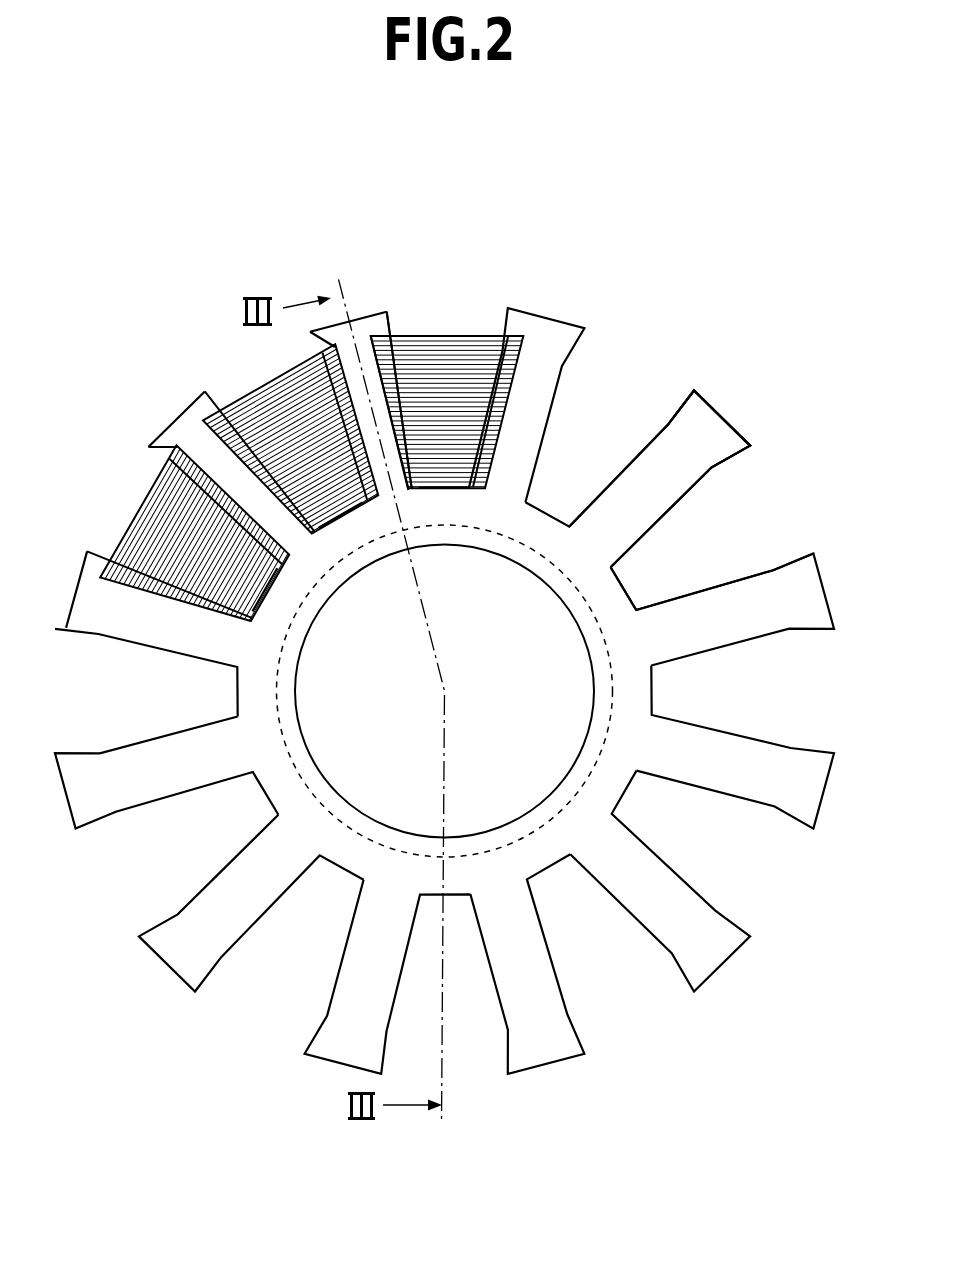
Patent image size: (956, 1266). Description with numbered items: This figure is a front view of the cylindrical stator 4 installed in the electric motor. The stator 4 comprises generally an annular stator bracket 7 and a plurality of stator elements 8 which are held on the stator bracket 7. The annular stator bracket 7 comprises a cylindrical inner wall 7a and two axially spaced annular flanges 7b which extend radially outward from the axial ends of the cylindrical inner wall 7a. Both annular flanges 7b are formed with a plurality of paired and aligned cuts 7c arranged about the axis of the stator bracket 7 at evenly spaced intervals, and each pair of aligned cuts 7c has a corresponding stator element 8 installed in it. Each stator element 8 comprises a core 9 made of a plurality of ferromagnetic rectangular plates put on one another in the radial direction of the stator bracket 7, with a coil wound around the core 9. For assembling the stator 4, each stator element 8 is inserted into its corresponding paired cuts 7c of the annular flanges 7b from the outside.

The stator 4 is at (669, 225).
The stator bracket 7 is at (719, 393).
The cylindrical inner wall 7a is at (593, 607).
The annular flanges 7b is at (710, 445).
The paired and aligned cuts 7c is at (757, 580).
The stator element 8 is at (454, 325).
The core 9 is at (407, 336).